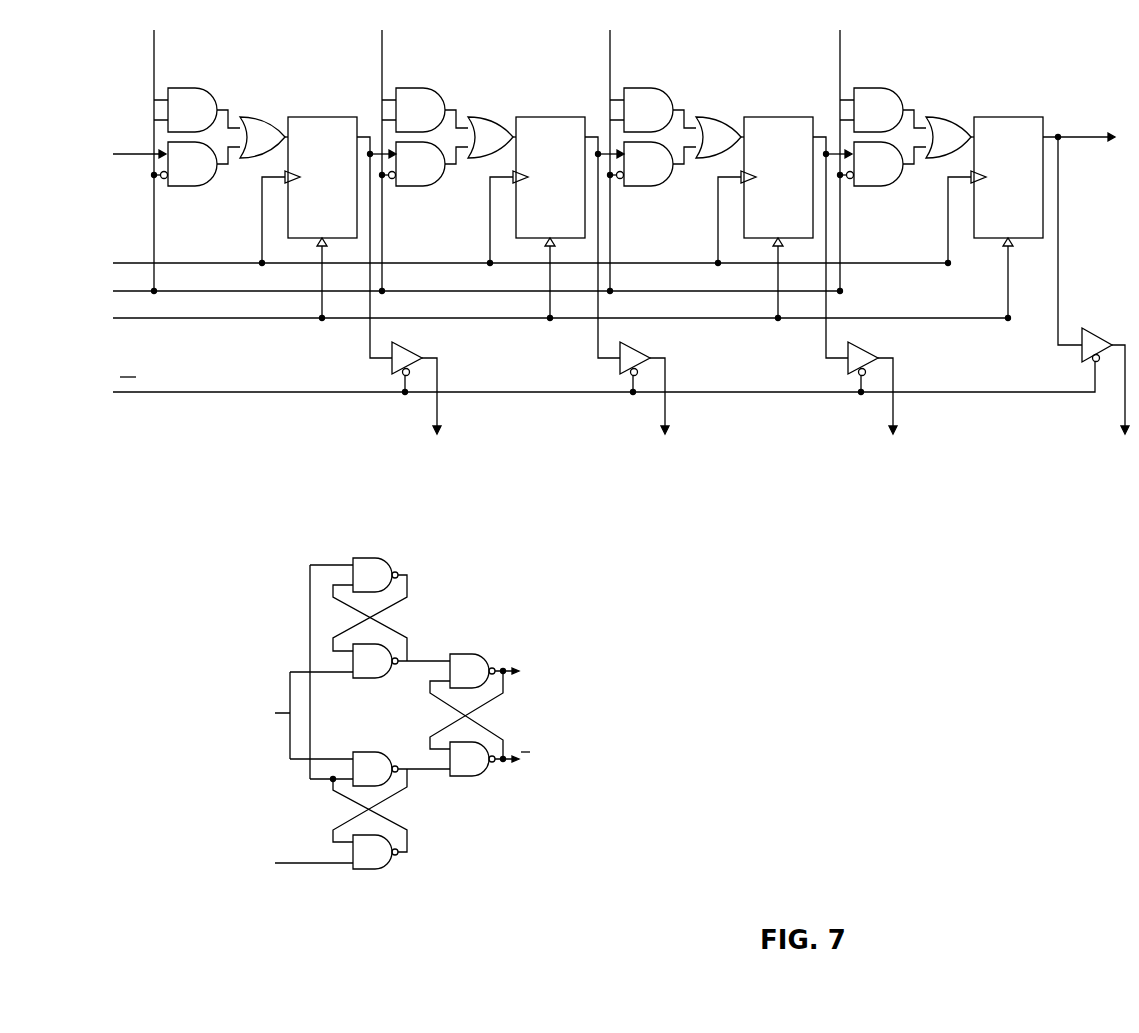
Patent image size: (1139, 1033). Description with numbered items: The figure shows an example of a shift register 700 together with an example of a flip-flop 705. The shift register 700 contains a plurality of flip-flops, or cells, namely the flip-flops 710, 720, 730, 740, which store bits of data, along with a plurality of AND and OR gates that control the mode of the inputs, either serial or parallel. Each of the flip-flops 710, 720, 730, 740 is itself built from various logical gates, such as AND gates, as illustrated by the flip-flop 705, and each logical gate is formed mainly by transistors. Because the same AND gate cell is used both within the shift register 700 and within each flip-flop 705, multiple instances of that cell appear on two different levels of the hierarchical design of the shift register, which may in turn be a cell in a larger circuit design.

The shift register 700 is at (621, 319).
The flip-flop 705 is at (577, 768).
The flip-flop 710 is at (322, 177).
The flip-flop 720 is at (550, 177).
The flip-flop 730 is at (778, 177).
The flip-flop 740 is at (1008, 177).